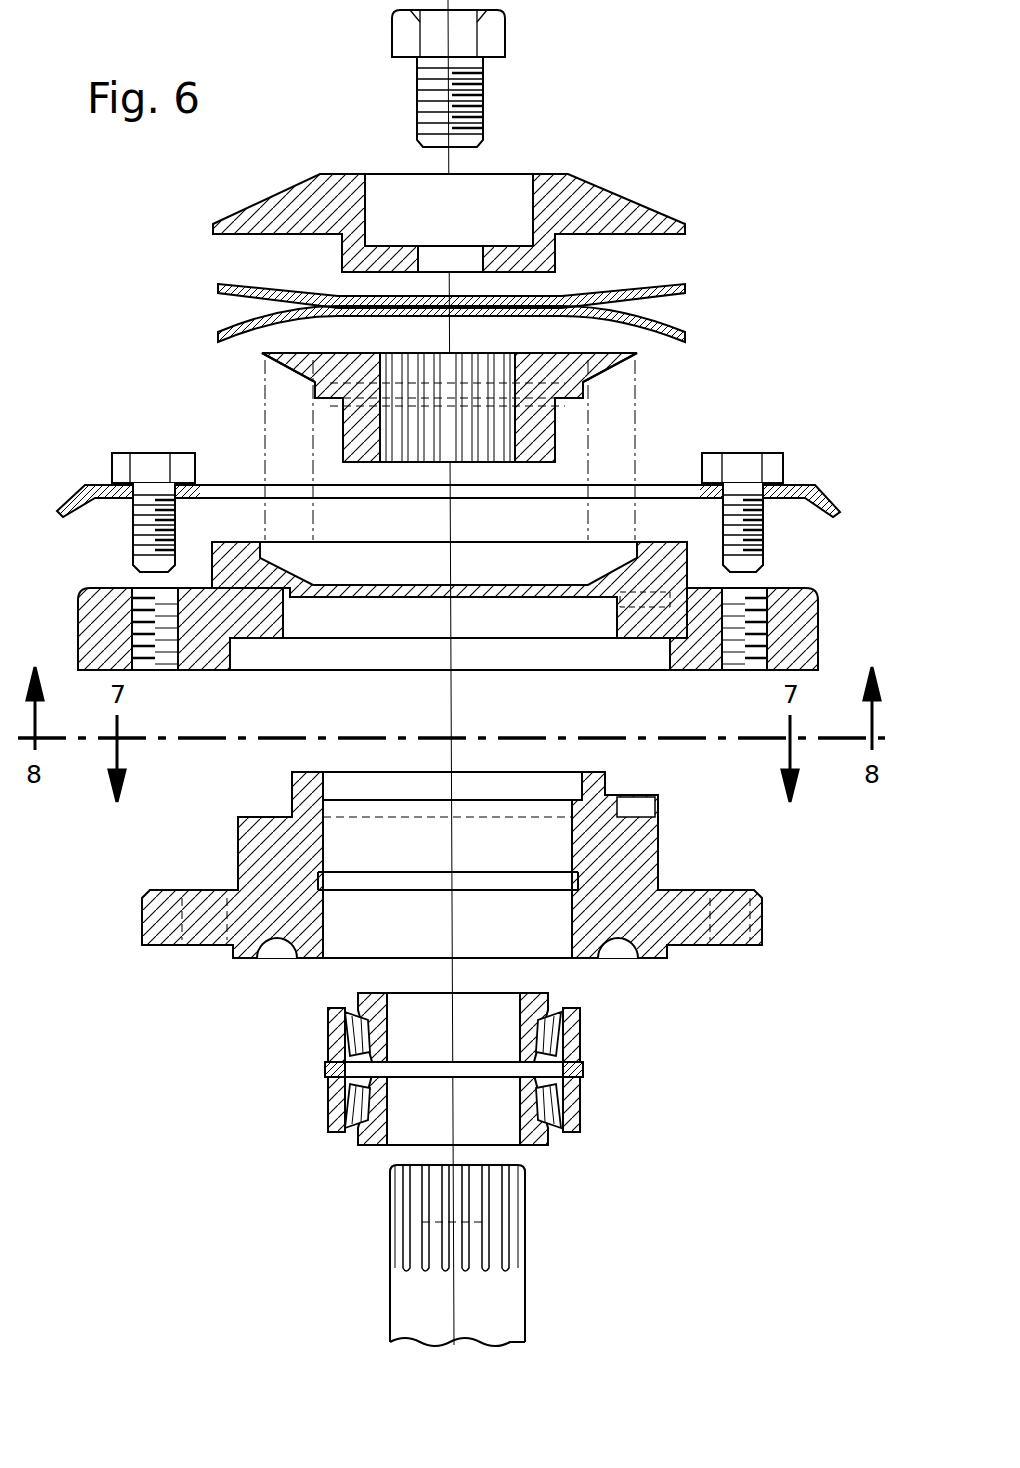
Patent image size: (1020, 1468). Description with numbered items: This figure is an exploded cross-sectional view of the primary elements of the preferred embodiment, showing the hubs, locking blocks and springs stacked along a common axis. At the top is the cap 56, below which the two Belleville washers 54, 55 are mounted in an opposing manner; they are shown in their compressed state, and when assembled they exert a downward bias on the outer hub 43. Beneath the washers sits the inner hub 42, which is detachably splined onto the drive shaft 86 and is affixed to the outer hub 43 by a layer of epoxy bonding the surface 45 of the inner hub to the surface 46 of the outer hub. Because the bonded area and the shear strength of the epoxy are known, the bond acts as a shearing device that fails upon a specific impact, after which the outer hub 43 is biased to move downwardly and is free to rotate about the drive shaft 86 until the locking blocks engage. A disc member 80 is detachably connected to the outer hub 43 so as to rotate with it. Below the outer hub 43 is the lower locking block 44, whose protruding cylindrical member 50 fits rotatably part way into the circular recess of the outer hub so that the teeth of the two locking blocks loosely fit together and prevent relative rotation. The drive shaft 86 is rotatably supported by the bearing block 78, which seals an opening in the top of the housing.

The inner hub 42 is at (553, 357).
The outer hub 43 is at (797, 622).
The lower locking block 44 is at (625, 880).
The bonding surface 45 is at (606, 372).
The bonding surface 46 is at (596, 576).
The protruding cylindrical member 50 is at (237, 851).
The Belleville washer 54 is at (640, 286).
The Belleville washer 55 is at (686, 330).
The cap 56 is at (594, 206).
The bearing block 78 is at (584, 1045).
The disc member 80 is at (812, 486).
The drive shaft 86 is at (516, 1304).